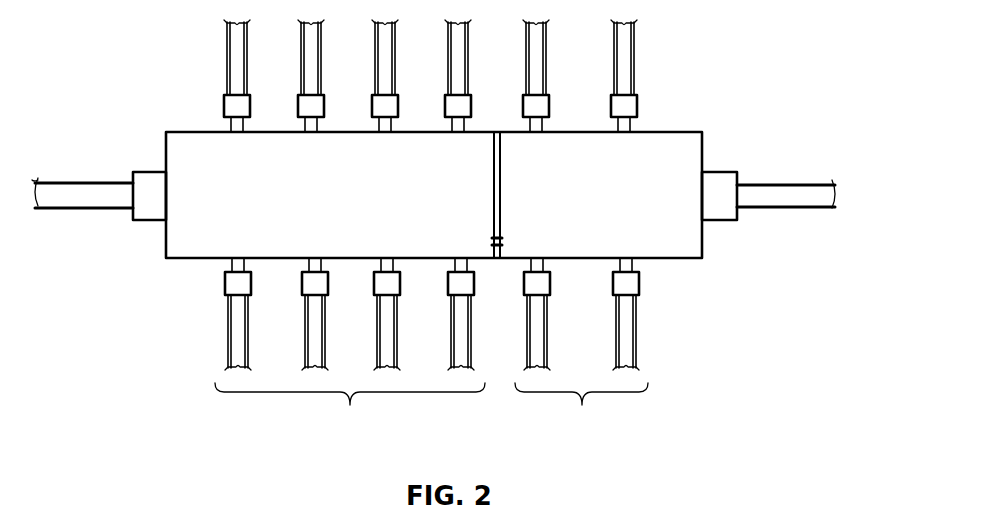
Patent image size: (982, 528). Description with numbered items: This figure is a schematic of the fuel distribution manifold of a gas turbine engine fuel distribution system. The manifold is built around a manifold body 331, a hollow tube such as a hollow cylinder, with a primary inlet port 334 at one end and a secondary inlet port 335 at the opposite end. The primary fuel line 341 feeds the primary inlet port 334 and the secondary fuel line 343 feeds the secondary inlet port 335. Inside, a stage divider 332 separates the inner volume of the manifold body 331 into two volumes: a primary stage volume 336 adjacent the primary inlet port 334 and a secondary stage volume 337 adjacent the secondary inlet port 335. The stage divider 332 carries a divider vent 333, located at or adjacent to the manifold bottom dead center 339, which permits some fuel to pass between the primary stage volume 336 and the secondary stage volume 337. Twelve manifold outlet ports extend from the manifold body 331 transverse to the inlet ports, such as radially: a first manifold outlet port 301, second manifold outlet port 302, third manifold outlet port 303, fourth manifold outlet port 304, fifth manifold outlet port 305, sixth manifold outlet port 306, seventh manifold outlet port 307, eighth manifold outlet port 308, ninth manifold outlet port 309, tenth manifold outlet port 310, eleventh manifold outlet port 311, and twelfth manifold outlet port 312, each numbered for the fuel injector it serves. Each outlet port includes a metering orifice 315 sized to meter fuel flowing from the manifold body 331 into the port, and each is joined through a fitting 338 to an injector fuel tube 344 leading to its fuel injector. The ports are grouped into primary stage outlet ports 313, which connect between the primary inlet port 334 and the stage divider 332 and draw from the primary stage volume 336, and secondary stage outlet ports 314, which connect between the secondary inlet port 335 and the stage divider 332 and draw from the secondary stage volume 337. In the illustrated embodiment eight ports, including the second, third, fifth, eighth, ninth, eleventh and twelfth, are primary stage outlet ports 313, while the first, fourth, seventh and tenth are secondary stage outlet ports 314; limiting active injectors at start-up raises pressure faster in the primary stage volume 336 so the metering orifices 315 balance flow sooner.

The first manifold outlet port 301 is at (628, 123).
The second manifold outlet port 302 is at (228, 125).
The third manifold outlet port 303 is at (312, 125).
The fourth manifold outlet port 304 is at (535, 125).
The fifth manifold outlet port 305 is at (384, 125).
The sixth manifold outlet port 306 is at (457, 125).
The seventh manifold outlet port 307 is at (540, 265).
The eighth manifold outlet port 308 is at (461, 258).
The ninth manifold outlet port 309 is at (386, 258).
The tenth manifold outlet port 310 is at (627, 262).
The eleventh manifold outlet port 311 is at (313, 258).
The twelfth manifold outlet port 312 is at (230, 263).
The primary stage outlet ports 313 is at (350, 413).
The secondary stage outlet ports 314 is at (581, 413).
The metering orifices 315 is at (641, 157).
The manifold body 331 is at (166, 132).
The stage divider 332 is at (494, 203).
The divider vent 333 is at (502, 238).
The primary inlet port 334 is at (150, 220).
The secondary inlet port 335 is at (717, 212).
The primary stage volume 336 is at (223, 198).
The secondary stage volume 337 is at (648, 230).
The fitting 338 is at (232, 105).
The manifold bottom dead center 339 is at (500, 258).
The primary fuel line 341 is at (87, 200).
The secondary fuel line 343 is at (772, 192).
The injector fuel tubes 344 is at (232, 56).